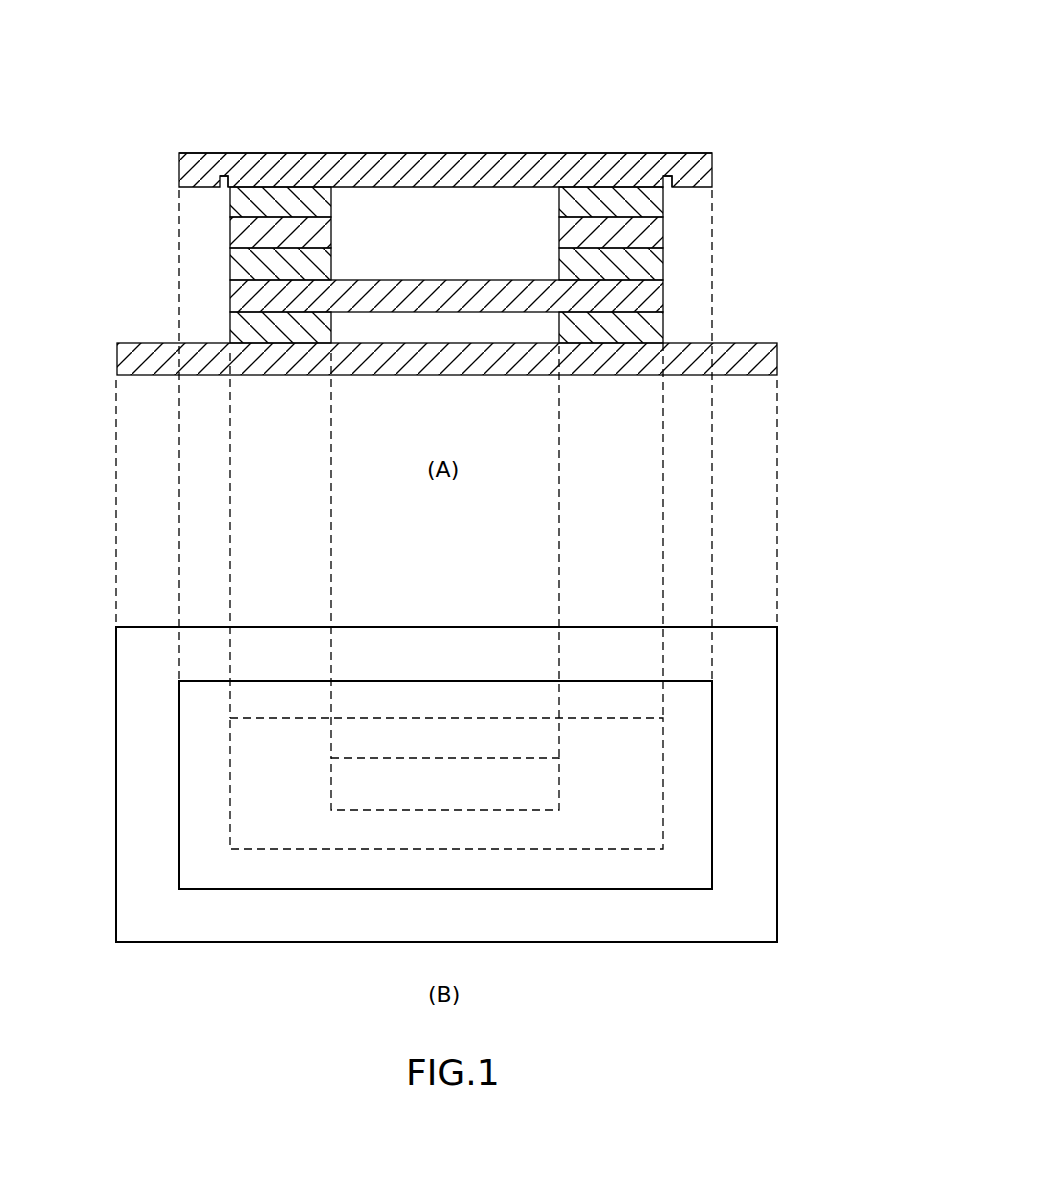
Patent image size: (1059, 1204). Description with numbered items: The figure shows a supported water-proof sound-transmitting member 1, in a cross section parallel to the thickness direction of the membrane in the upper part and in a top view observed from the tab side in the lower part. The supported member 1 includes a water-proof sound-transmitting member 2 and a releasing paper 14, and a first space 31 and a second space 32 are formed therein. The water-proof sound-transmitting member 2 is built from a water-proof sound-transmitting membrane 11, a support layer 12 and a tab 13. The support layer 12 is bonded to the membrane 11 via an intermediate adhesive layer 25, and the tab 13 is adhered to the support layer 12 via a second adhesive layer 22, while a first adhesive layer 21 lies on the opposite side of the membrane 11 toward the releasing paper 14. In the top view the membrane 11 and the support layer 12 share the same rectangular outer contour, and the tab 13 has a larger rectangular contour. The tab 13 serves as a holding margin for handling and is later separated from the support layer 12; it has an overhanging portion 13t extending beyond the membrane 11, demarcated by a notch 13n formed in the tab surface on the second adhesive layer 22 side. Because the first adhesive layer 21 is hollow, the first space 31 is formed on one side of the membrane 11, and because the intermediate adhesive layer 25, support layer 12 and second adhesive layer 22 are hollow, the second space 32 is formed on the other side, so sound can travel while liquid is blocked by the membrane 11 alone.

The supported water-proof sound-transmitting member 1 is at (654, 93).
The water-proof sound-transmitting member 2 is at (833, 127).
The water-proof sound-transmitting membrane 11 is at (663, 296).
The support layer 12 is at (663, 232).
The tab 13 is at (712, 165).
The notch 13n is at (224, 176).
The overhanging portion 13t is at (690, 172).
The releasing paper 14 is at (117, 357).
The first adhesive layer 21 is at (663, 328).
The second adhesive layer 22 is at (663, 202).
The intermediate adhesive layer 25 is at (663, 264).
The first space 31 is at (435, 322).
The second space 32 is at (445, 228).